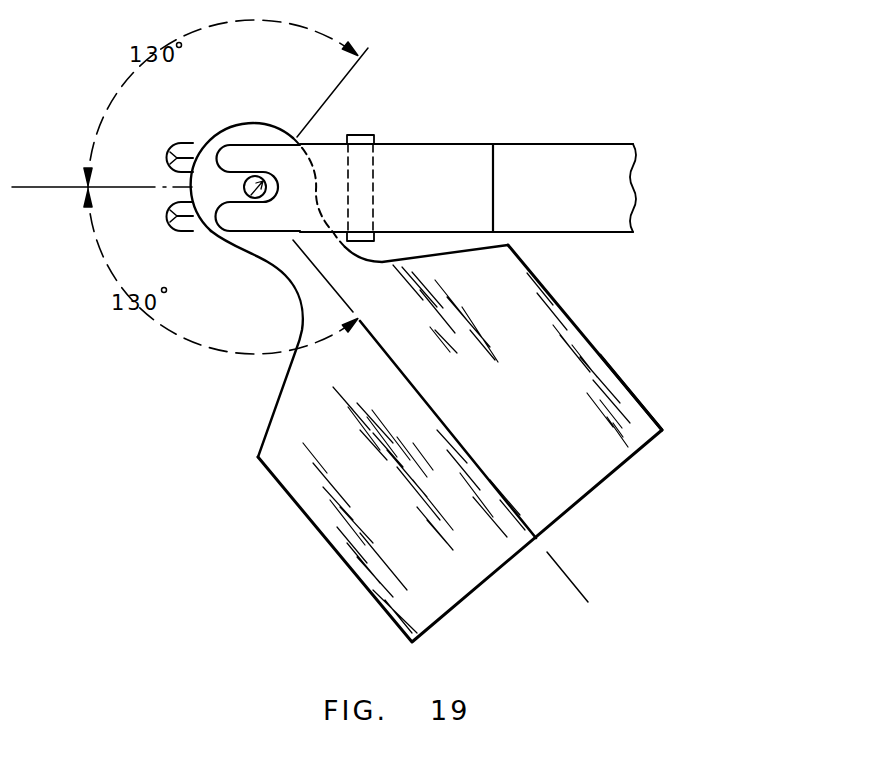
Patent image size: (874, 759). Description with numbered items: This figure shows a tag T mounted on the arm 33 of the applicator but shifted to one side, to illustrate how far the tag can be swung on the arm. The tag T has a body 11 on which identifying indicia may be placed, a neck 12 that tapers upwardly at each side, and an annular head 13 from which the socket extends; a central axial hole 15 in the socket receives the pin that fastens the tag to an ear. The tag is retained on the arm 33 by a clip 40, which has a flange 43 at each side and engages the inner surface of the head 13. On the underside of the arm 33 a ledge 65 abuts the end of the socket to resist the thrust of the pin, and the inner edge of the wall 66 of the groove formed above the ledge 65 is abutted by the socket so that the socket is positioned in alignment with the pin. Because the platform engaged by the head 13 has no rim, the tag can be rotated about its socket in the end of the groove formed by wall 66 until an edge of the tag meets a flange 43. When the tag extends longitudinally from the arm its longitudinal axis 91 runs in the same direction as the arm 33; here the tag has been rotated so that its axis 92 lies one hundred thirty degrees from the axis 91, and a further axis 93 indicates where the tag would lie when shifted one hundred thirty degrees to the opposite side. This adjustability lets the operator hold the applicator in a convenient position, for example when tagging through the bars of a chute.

The body 11 is at (335, 523).
The neck 12 is at (284, 279).
The annular head 13 is at (254, 127).
The central axial hole 15 is at (243, 188).
The arm 33 is at (593, 152).
The clip 40 is at (460, 152).
The flanges 43 is at (356, 135).
The ledge 65 is at (194, 143).
The wall 66 is at (166, 163).
The longitudinal axis 91 is at (42, 185).
The axis 92 is at (445, 418).
The axis 93 is at (353, 74).
The tag T is at (633, 392).